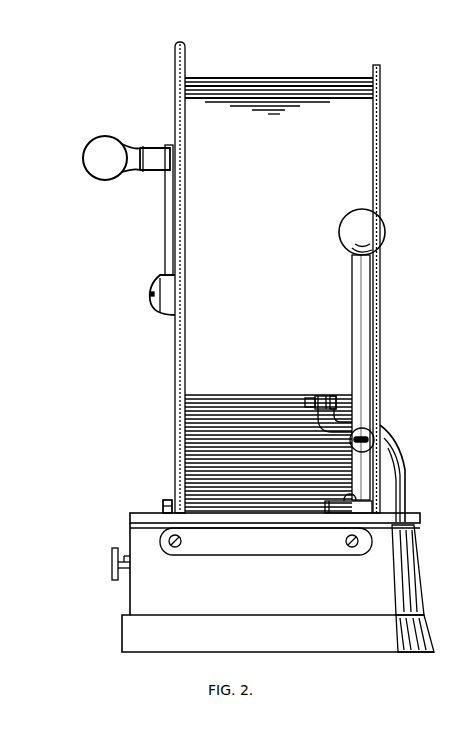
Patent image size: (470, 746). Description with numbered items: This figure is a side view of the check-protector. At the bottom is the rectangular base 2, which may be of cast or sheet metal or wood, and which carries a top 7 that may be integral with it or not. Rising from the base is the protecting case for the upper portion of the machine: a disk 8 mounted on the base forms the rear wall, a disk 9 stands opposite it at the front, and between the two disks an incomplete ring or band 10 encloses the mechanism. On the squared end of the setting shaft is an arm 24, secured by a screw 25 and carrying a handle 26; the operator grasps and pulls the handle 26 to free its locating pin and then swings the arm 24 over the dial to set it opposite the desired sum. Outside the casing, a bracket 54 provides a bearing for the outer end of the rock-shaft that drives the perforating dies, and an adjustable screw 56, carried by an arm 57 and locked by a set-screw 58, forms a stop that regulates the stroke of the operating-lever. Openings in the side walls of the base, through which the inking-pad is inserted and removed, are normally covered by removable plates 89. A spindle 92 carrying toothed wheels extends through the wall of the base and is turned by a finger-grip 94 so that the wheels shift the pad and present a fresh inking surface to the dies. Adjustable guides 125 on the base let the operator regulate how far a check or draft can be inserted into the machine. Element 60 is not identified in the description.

The base 2 is at (145, 605).
The top 7 is at (140, 520).
The disk 8 is at (381, 90).
The disk 9 is at (185, 60).
The incomplete ring or band 10 is at (255, 80).
The arm 24 is at (165, 226).
The screw 25 is at (152, 290).
The handle 26 is at (104, 166).
The bracket 54 is at (384, 470).
The adjustable screw 56 is at (316, 397).
The arm 57 is at (340, 425).
The set-screw 58 is at (333, 395).
The block 60 is at (195, 510).
The removable plates 89 is at (216, 548).
The spindle 92 is at (122, 556).
The finger-grip 94 is at (112, 568).
The adjustable guides 125 is at (165, 500).